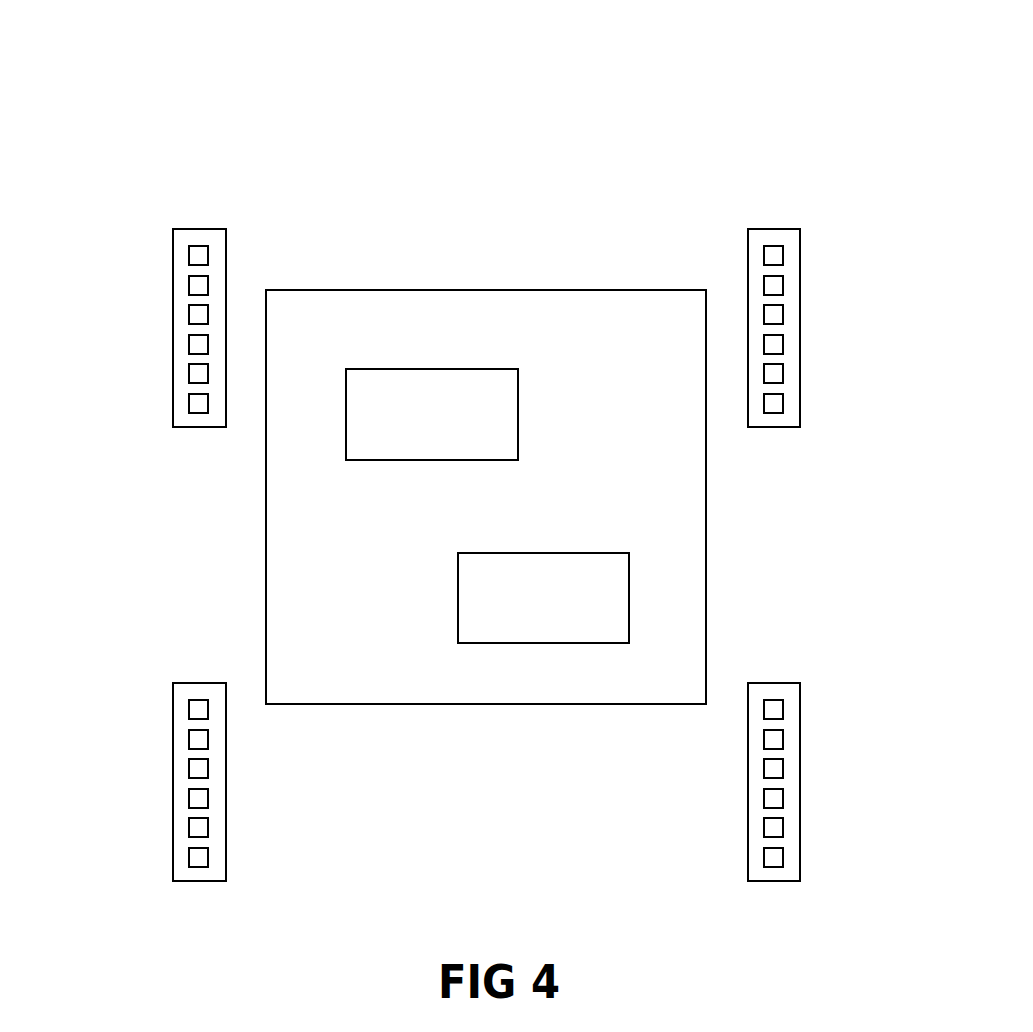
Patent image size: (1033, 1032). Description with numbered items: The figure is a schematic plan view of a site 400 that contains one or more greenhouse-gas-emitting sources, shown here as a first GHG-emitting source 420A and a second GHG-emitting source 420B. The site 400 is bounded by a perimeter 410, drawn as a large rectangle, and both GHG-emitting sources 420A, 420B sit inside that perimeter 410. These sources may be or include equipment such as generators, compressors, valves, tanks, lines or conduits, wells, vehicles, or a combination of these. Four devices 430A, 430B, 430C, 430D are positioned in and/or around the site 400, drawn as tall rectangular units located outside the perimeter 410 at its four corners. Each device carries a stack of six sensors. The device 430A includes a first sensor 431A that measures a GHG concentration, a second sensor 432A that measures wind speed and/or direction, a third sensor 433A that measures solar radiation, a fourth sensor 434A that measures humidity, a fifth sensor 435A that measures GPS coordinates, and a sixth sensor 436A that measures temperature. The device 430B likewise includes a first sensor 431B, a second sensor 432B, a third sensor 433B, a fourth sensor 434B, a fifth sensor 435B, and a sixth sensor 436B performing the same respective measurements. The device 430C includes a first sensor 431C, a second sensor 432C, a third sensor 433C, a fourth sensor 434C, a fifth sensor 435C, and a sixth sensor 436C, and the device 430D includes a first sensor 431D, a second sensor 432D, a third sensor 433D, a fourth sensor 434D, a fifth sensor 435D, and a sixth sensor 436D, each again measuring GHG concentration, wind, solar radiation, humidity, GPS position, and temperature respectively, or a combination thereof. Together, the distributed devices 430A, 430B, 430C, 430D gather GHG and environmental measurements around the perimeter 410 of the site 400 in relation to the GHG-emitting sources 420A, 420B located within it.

The site 400 is at (266, 80).
The perimeter 410 is at (355, 290).
The GHG-emitting source 420A is at (497, 369).
The GHG-emitting source 420B is at (593, 553).
The device 430A is at (128, 212).
The device 430B is at (128, 666).
The device 430C is at (845, 212).
The device 430D is at (845, 666).
The first sensor 431A is at (189, 254).
The second sensor 432A is at (189, 284).
The third sensor 433A is at (189, 313).
The fourth sensor 434A is at (189, 343).
The fifth sensor 435A is at (189, 372).
The sixth sensor 436A is at (189, 402).
The first sensor 431B is at (189, 708).
The second sensor 432B is at (189, 738).
The third sensor 433B is at (189, 767).
The fourth sensor 434B is at (189, 797).
The fifth sensor 435B is at (189, 826).
The sixth sensor 436B is at (189, 856).
The first sensor 431C is at (783, 254).
The second sensor 432C is at (783, 284).
The third sensor 433C is at (783, 313).
The fourth sensor 434C is at (783, 343).
The fifth sensor 435C is at (783, 372).
The sixth sensor 436C is at (783, 402).
The first sensor 431D is at (783, 708).
The second sensor 432D is at (783, 738).
The third sensor 433D is at (783, 767).
The fourth sensor 434D is at (783, 797).
The fifth sensor 435D is at (783, 826).
The sixth sensor 436D is at (783, 856).